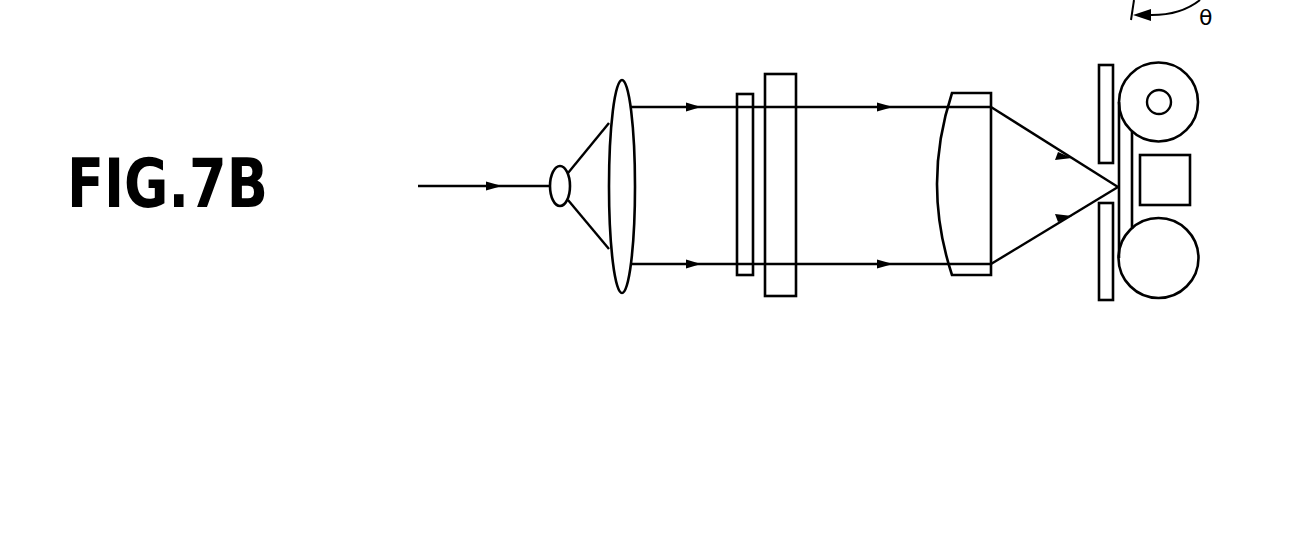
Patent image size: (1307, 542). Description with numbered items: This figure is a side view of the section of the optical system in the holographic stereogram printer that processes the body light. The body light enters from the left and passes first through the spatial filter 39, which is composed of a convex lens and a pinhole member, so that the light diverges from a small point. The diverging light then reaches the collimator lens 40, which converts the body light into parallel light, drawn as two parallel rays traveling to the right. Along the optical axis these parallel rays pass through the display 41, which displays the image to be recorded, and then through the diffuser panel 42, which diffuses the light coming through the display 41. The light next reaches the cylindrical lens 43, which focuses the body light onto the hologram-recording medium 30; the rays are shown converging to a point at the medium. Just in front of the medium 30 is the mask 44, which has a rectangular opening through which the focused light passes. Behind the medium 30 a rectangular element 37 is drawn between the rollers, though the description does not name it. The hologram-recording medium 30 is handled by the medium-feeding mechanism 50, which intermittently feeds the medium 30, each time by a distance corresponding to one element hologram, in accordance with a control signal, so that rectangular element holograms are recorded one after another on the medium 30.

The spatial filter 39 is at (551, 169).
The collimator lens 40 is at (618, 95).
The display 41 is at (744, 93).
The diffuser panel 42 is at (785, 73).
The cylindrical lens 43 is at (969, 99).
The mask 44 is at (1103, 80).
The medium-feeding mechanism 50 is at (1180, 82).
The hologram-recording medium 30 is at (1133, 146).
The detector block 37 is at (1180, 193).